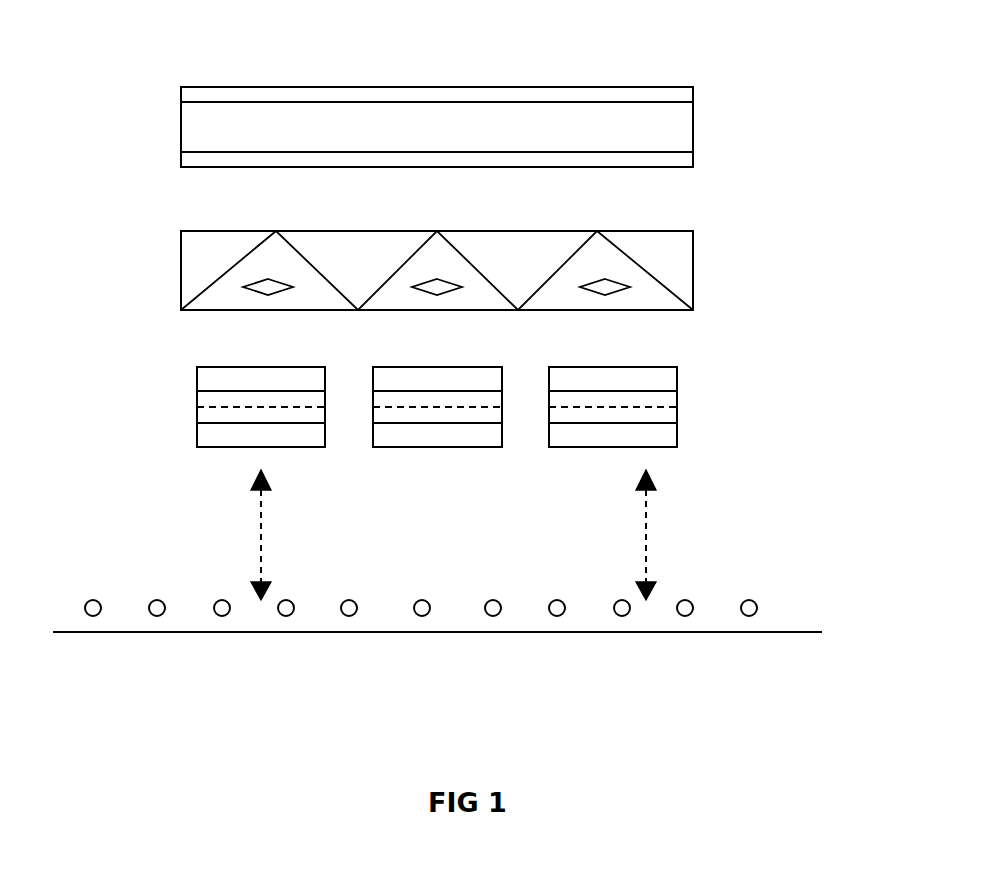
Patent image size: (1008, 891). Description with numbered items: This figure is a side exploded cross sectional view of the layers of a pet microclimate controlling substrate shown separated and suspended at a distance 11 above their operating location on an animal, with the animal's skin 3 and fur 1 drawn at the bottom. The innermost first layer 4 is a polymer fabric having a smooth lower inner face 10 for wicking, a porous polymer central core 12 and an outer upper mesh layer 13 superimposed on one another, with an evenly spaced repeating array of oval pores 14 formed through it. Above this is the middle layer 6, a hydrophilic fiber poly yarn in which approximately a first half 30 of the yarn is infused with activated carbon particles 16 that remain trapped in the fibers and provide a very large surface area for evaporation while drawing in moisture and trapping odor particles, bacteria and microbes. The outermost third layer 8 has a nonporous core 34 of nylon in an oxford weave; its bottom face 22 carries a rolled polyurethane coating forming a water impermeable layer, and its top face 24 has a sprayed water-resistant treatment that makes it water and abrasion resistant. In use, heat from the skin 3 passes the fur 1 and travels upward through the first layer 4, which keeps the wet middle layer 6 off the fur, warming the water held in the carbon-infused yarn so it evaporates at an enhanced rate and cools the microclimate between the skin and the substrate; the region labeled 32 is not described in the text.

The fur 1 is at (688, 600).
The skin 3 is at (577, 632).
The first layer 4 is at (718, 398).
The middle layer 6 is at (758, 257).
The third layer 8 is at (119, 115).
The lower inner face 10 is at (665, 447).
The distance 11 is at (262, 535).
The central core 12 is at (664, 398).
The upper mesh layer 13 is at (207, 378).
The pores 14 is at (520, 437).
The activated carbon particles 16 is at (610, 282).
The bottom face 22 is at (287, 162).
The top face 24 is at (484, 87).
The first half 30 is at (223, 288).
The reflector frame 32 is at (680, 256).
The nonporous core 34 is at (677, 121).